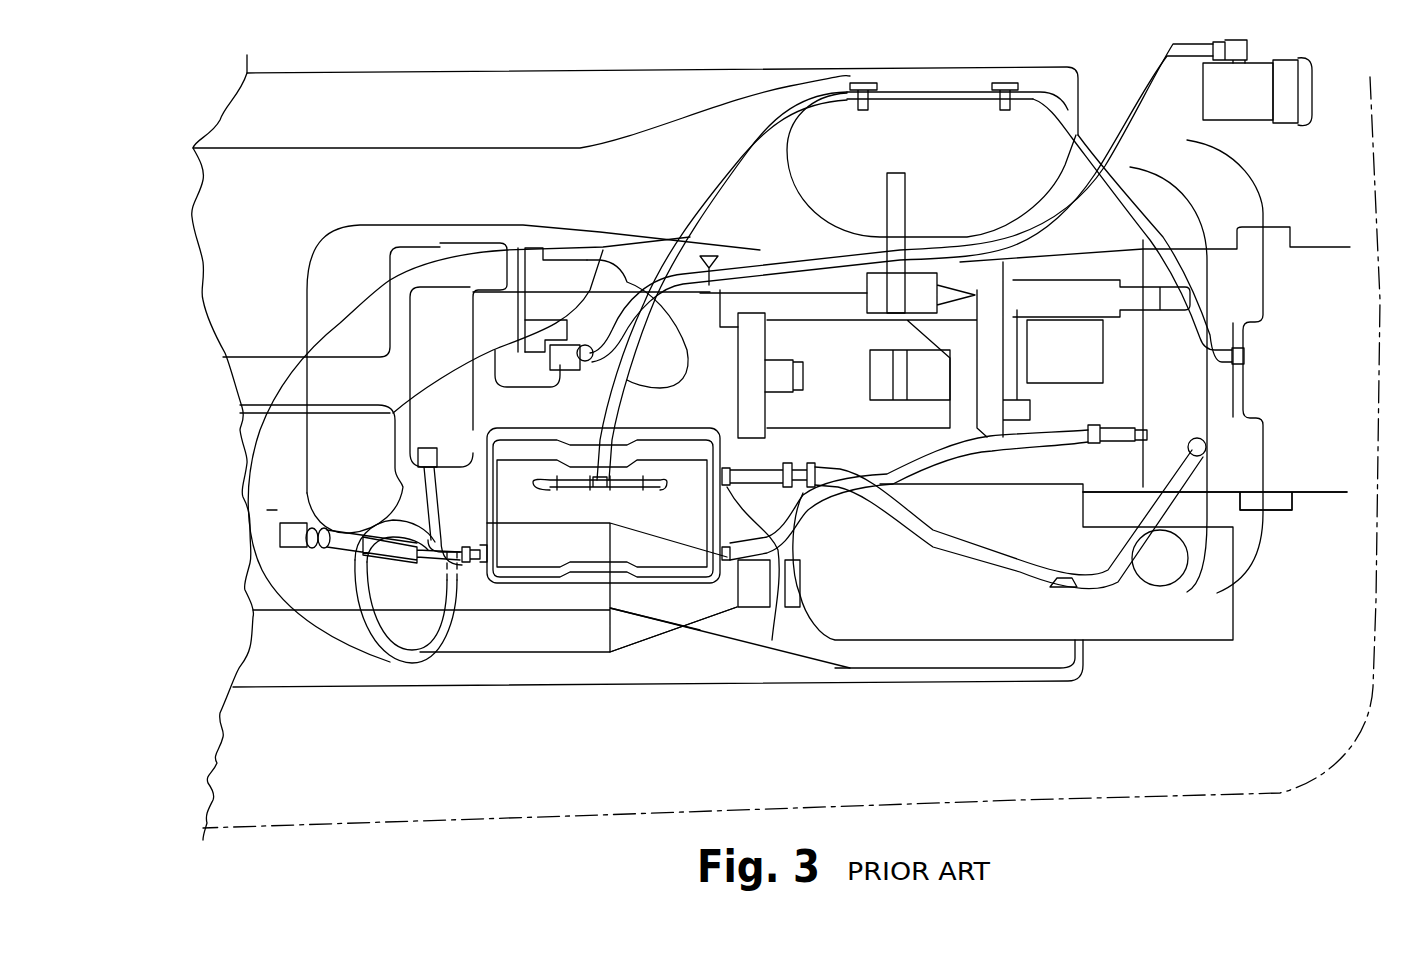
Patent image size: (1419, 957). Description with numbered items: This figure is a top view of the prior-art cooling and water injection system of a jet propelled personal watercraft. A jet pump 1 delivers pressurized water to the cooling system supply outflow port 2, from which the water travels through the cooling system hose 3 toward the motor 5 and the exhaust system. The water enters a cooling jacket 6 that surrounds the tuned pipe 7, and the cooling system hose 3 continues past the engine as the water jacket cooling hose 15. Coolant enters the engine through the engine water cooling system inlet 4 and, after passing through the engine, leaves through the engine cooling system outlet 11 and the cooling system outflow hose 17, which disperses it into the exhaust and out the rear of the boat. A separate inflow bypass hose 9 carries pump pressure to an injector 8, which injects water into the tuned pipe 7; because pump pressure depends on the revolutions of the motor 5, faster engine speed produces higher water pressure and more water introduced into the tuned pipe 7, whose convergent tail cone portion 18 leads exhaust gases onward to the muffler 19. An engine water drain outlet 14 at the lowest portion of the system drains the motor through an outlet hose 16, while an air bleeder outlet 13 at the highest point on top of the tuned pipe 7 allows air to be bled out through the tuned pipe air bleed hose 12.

The jet pump 1 is at (1188, 393).
The cooling system supply outflow port 2 is at (1250, 490).
The cooling system hose 3 is at (1083, 423).
The engine water cooling system inlet 4 is at (727, 570).
The motor 5 is at (627, 507).
The cooling jacket 6 is at (267, 537).
The tuned pipe 7 is at (330, 440).
The injector 8 is at (387, 410).
The inflow bypass hose 9 is at (425, 495).
The engine cooling system outlet 11 is at (790, 607).
The tuned pipe air bleed hose 12 is at (763, 147).
The air bleeder outlet 13 is at (590, 275).
The engine water drain outlet 14 is at (580, 487).
The water jacket cooling hose 15 is at (415, 600).
The outlet hose 16 is at (1167, 68).
The cooling system outflow hose 17 is at (1100, 577).
The convergent tail cone portion 18 is at (740, 608).
The muffler 19 is at (890, 573).